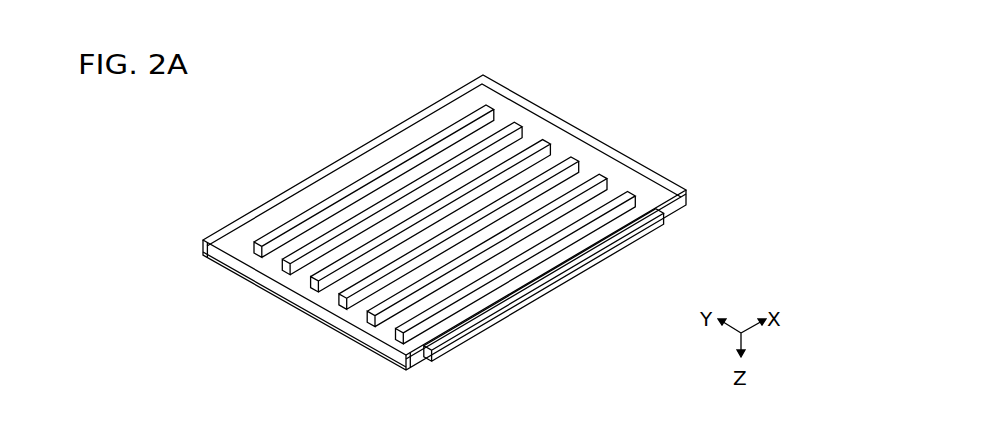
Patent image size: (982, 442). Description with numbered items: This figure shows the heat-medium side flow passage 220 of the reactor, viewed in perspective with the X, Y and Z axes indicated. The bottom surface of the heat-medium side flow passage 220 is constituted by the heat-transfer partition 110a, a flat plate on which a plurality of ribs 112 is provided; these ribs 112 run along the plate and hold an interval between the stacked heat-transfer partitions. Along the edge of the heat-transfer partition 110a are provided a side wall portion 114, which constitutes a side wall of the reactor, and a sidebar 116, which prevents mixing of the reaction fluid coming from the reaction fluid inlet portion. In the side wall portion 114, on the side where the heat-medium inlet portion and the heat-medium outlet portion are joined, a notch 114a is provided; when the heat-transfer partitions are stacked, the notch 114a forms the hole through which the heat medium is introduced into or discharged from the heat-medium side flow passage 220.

The heat-medium side flow passage 220 is at (279, 157).
The sidebar 116 is at (688, 205).
The heat-transfer partition 110a is at (510, 122).
The notch 114a is at (688, 212).
The side wall portion 114 is at (445, 104).
The ribs 112 is at (640, 195).